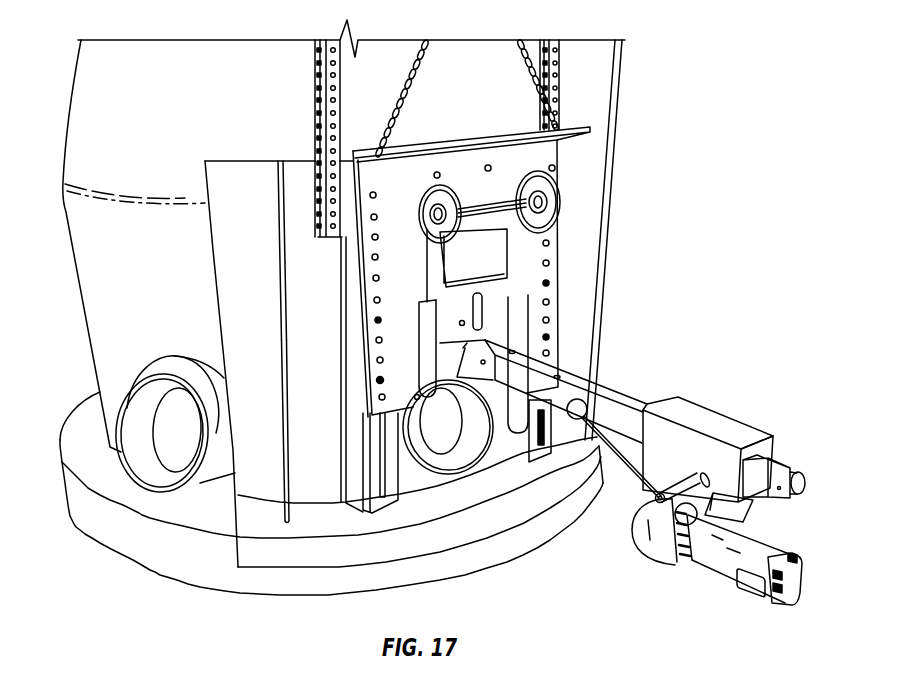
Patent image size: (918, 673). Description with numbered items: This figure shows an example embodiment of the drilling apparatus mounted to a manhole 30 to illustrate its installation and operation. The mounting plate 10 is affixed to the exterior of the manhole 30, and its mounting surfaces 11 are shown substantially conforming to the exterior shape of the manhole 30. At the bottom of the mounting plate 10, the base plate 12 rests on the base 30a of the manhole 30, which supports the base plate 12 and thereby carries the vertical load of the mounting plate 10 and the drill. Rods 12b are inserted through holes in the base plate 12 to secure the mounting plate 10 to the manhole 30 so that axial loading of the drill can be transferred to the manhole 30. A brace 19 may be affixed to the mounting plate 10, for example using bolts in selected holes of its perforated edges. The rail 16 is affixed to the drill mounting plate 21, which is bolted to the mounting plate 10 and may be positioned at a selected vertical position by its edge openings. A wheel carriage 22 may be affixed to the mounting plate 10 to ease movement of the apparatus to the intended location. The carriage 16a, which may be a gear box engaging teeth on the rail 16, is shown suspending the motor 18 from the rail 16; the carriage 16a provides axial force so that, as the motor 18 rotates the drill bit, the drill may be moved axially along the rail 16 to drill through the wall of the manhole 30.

The mounting plate 10 is at (262, 355).
The mounting surfaces 11 is at (227, 291).
The base plate 12 is at (257, 530).
The rods 12b is at (280, 273).
The rail 16 is at (607, 390).
The carriage 16a is at (703, 417).
The motor 18 is at (722, 570).
The brace 19 is at (318, 112).
The drill mounting plate 21 is at (378, 381).
The wheel carriage 22 is at (558, 204).
The manhole 30 is at (89, 116).
The base of the manhole 30a is at (73, 443).